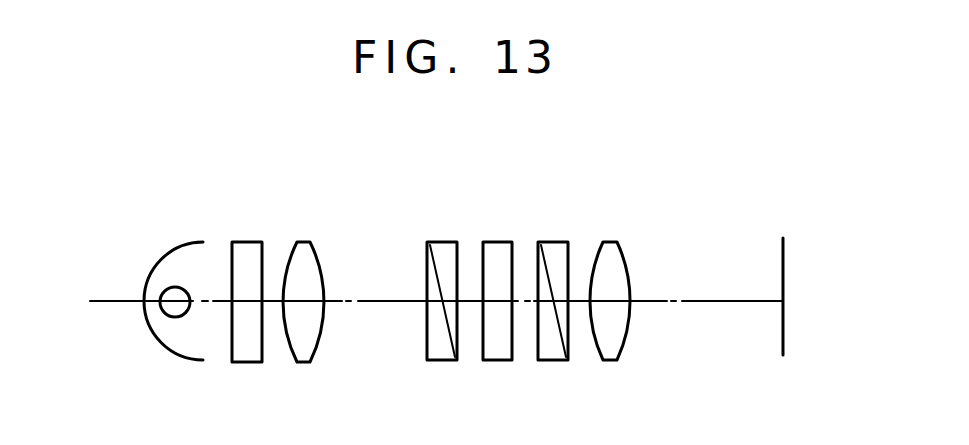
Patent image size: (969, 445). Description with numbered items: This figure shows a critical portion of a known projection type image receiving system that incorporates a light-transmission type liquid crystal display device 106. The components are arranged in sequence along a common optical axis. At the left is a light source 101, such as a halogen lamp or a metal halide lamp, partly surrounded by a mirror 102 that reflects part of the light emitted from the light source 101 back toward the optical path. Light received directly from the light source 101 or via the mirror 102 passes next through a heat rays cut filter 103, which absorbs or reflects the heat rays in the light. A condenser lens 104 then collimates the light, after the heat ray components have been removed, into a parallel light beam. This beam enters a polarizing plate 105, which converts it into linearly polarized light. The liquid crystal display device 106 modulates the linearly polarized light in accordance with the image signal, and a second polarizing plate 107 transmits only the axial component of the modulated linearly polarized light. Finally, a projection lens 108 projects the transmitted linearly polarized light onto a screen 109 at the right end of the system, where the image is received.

The light source 101 is at (163, 311).
The mirror 102 is at (162, 258).
The heat rays cut filter 103 is at (250, 362).
The condenser lens 104 is at (293, 247).
The polarizing plate 105 is at (442, 357).
The light-transmission type liquid crystal display device 106 is at (499, 242).
The polarizing plate 107 is at (552, 357).
The projection lens 108 is at (605, 242).
The screen 109 is at (782, 343).